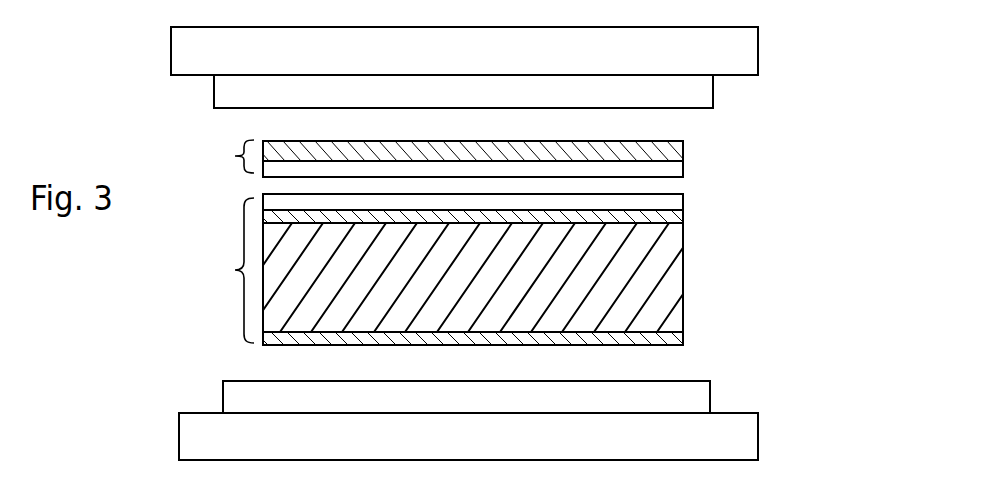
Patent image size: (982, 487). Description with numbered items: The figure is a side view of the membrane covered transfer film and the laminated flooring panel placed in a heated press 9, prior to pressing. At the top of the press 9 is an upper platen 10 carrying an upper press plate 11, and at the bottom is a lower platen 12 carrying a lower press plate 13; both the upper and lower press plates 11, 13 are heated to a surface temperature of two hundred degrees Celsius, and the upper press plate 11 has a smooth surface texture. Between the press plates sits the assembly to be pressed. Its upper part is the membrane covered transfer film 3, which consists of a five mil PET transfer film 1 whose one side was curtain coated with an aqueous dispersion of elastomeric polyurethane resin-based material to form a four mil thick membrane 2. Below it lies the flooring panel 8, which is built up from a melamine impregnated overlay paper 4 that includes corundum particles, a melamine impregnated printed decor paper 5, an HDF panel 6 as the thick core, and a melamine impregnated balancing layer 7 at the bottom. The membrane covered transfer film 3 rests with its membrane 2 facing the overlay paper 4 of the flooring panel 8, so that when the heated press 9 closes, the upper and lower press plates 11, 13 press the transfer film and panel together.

The PET transfer film 1 is at (683, 150).
The membrane 2 is at (683, 169).
The membrane covered transfer film 3 is at (223, 156).
The melamine impregnated overlay paper 4 is at (683, 201).
The melamine impregnated printed decor paper 5 is at (683, 216).
The HDF panel 6 is at (683, 270).
The melamine impregnated balancing layer 7 is at (683, 337).
The flooring panel 8 is at (227, 270).
The heated press 9 is at (858, 240).
The upper platen 10 is at (758, 50).
The upper press plate 11 is at (713, 91).
The lower platen 12 is at (758, 436).
The lower press plate 13 is at (710, 397).